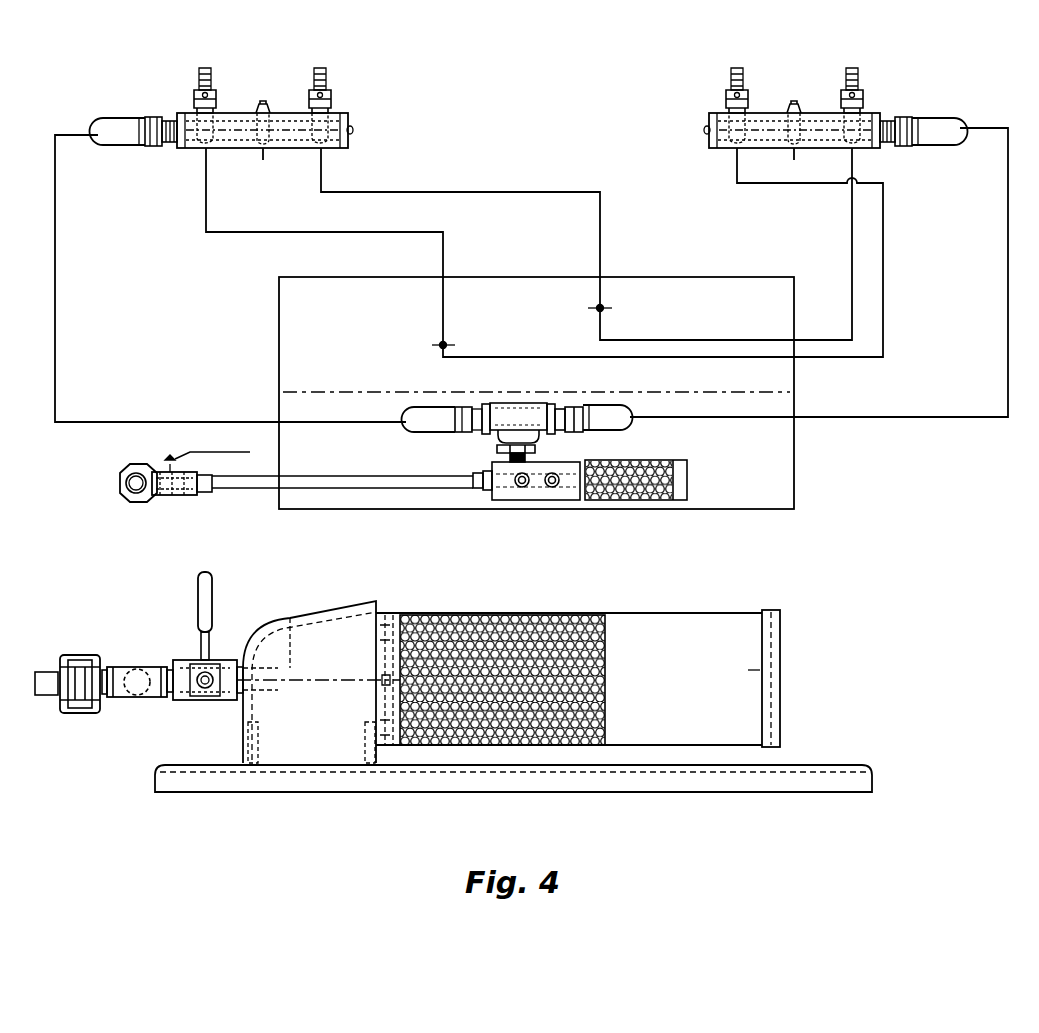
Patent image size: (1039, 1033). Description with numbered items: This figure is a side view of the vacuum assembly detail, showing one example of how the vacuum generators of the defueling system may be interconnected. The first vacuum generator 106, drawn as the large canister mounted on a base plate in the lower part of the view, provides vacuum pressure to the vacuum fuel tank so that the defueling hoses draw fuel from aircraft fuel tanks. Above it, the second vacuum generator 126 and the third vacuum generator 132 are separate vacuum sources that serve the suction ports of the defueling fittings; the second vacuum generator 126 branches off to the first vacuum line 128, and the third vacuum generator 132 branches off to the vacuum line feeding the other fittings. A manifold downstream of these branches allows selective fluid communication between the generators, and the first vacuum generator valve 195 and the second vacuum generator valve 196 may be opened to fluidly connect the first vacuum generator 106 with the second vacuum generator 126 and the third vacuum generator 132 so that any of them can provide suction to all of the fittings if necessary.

The first vacuum line 128 is at (432, 413).
The third vacuum generator 132 is at (605, 403).
The second vacuum generator 126 is at (687, 479).
The second vacuum generator valve 196 is at (157, 492).
The first vacuum generator valve 195 is at (198, 700).
The first vacuum generator 106 is at (755, 670).